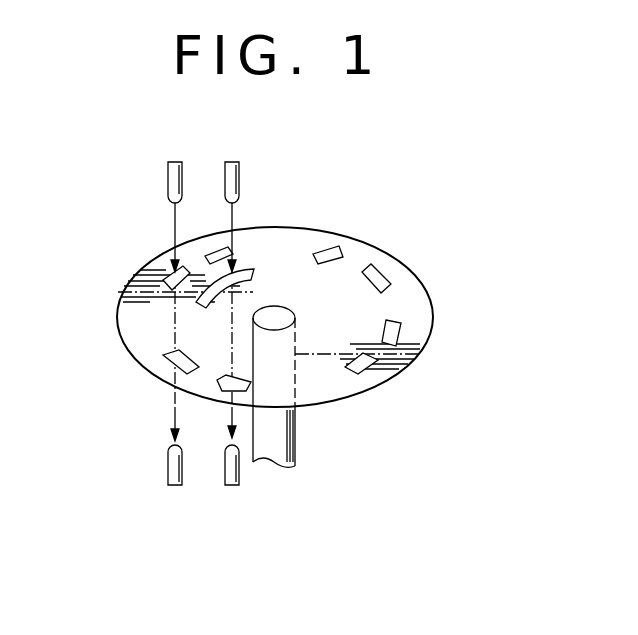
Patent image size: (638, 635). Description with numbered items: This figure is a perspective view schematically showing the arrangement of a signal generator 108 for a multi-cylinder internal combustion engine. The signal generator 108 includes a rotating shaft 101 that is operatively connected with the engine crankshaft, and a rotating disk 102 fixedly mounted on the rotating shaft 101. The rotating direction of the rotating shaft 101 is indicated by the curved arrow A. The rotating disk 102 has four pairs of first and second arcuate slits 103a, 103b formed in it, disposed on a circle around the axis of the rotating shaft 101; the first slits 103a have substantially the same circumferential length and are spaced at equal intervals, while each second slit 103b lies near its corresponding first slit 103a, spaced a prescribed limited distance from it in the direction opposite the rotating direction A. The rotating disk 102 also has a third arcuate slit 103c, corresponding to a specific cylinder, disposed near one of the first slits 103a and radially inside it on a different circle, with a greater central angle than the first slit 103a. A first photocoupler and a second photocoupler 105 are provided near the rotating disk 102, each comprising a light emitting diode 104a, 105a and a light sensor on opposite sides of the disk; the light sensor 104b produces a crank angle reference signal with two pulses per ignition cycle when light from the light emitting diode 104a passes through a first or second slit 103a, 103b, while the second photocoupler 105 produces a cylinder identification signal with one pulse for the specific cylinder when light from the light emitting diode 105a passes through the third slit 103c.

The rotating shaft 101 is at (294, 456).
The rotating disk 102 is at (419, 277).
The first arcuate slits 103a is at (168, 272).
The second arcuate slits 103b is at (217, 248).
The third arcuate slit 103c is at (250, 276).
The light emitting diode 104a is at (128, 217).
The light sensor 104b is at (167, 463).
The second photocoupler 105 is at (238, 467).
The light emitting diode 105a is at (240, 178).
The signal generator 108 is at (343, 412).
The curved arrow A is at (292, 290).